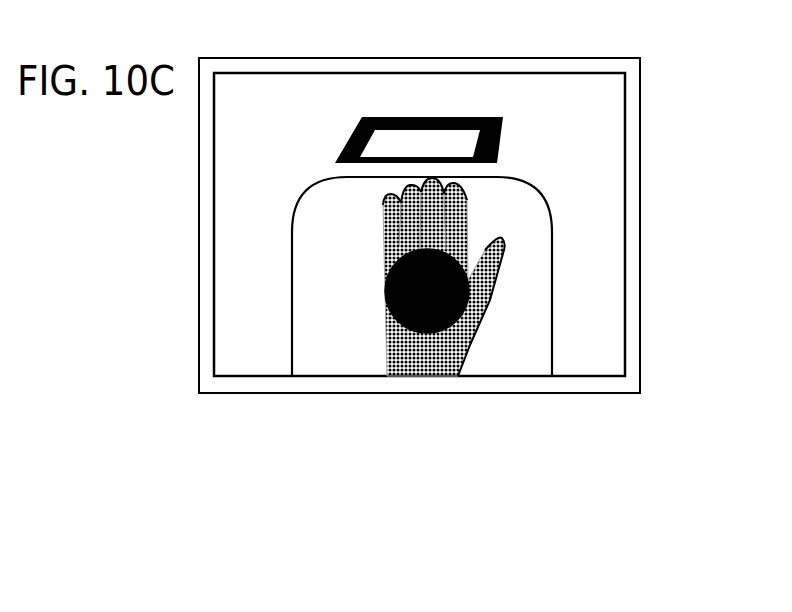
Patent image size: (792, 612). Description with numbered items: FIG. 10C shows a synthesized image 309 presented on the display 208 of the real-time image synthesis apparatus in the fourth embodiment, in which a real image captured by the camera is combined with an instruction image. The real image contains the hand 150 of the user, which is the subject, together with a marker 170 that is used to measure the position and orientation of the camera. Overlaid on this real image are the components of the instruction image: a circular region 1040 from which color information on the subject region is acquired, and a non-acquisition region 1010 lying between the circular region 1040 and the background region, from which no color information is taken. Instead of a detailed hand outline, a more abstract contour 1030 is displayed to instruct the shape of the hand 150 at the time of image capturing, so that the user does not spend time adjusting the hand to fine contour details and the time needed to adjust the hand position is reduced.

The display 208 is at (422, 58).
The synthesized image 309 is at (555, 73).
The marker 170 is at (500, 140).
The non-acquisition region 1010 is at (552, 338).
The hand 150 is at (487, 270).
The circular region 1040 is at (390, 261).
The contour 1030 is at (398, 368).